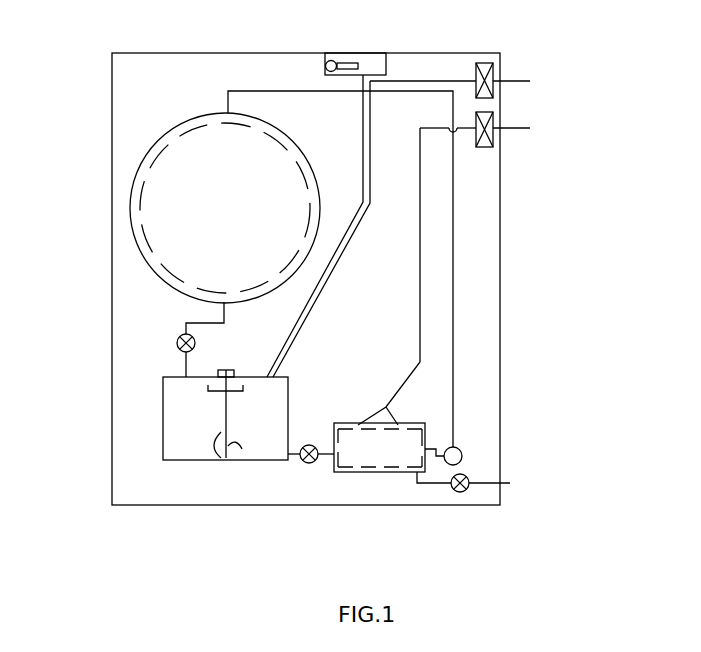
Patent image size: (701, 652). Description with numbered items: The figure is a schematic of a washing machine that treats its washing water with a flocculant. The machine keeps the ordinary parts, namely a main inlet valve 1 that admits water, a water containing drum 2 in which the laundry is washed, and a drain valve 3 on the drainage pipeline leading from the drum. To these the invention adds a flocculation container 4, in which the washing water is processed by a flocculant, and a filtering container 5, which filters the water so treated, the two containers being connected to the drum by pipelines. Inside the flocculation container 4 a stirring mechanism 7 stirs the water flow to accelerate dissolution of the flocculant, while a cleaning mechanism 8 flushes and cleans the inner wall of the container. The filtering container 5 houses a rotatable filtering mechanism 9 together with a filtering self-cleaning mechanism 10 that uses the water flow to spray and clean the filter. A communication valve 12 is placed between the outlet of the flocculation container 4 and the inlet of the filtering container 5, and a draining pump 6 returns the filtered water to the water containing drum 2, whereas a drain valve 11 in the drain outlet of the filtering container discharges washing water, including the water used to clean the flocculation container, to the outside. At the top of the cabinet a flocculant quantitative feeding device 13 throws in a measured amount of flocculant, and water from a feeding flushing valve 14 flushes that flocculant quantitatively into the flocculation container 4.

The main inlet valve 1 is at (492, 112).
The water containing drum 2 is at (129, 200).
The drain valve 3 is at (180, 337).
The flocculation container 4 is at (182, 430).
The filtering container 5 is at (413, 423).
The draining pump 6 is at (461, 449).
The stirring mechanism 7 is at (226, 438).
The cleaning mechanism 8 is at (208, 389).
The rotatable filtering mechanism 9 is at (370, 465).
The filtering self-cleaning mechanism 10 is at (373, 418).
The drain valve 11 is at (466, 490).
The communication valve 12 is at (306, 464).
The flocculant quantitative feeding device 13 is at (378, 63).
The feeding flushing valve 14 is at (488, 75).